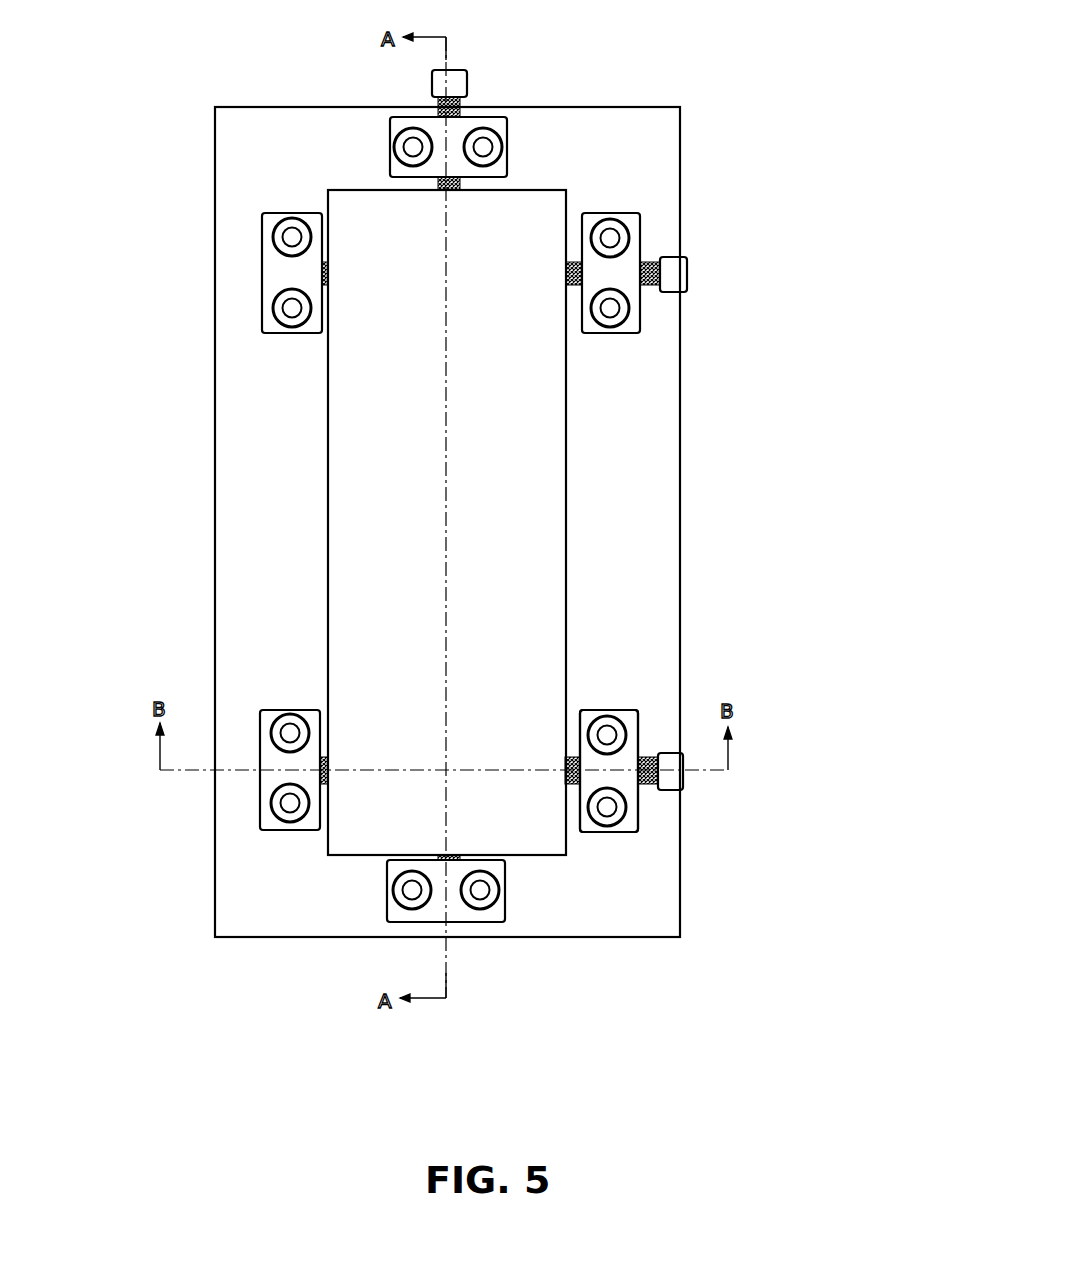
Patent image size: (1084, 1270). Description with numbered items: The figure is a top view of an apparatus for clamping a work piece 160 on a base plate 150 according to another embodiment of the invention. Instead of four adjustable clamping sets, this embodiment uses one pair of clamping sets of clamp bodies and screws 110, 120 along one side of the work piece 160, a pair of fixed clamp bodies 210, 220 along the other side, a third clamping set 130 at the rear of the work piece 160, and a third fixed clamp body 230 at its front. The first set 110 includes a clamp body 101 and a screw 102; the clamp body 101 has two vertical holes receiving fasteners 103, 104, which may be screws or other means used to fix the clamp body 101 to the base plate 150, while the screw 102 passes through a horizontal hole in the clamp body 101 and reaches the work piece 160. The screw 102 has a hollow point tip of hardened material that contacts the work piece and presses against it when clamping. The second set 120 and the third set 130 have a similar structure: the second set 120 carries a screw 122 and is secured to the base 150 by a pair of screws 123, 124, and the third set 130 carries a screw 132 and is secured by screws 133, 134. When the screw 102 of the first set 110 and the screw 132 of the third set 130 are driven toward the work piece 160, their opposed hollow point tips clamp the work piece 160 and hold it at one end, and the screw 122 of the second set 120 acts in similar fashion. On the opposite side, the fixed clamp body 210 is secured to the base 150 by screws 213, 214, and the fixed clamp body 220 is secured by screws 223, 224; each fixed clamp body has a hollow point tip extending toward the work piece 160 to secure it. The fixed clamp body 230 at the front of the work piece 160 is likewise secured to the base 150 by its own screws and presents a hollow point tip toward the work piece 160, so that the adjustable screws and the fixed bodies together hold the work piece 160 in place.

The clamp body 101 is at (627, 822).
The screw 102 is at (680, 782).
The fastener 103 is at (592, 808).
The fastener 104 is at (590, 732).
The first set 110 is at (658, 792).
The second set 120 is at (739, 268).
The screw 122 is at (678, 272).
The screw 123 is at (615, 310).
The screw 124 is at (612, 238).
The third set 130 is at (463, 103).
The screw 132 is at (465, 75).
The screw 133 is at (507, 148).
The screw 134 is at (390, 147).
The base plate 150 is at (663, 588).
The work piece 160 is at (542, 530).
The fixed clamp body 210 is at (202, 792).
The screw 213 is at (272, 722).
The screw 214 is at (272, 812).
The fixed clamp body 220 is at (210, 297).
The screw 223 is at (272, 232).
The screw 224 is at (272, 317).
The fixed clamp body 230 is at (400, 912).